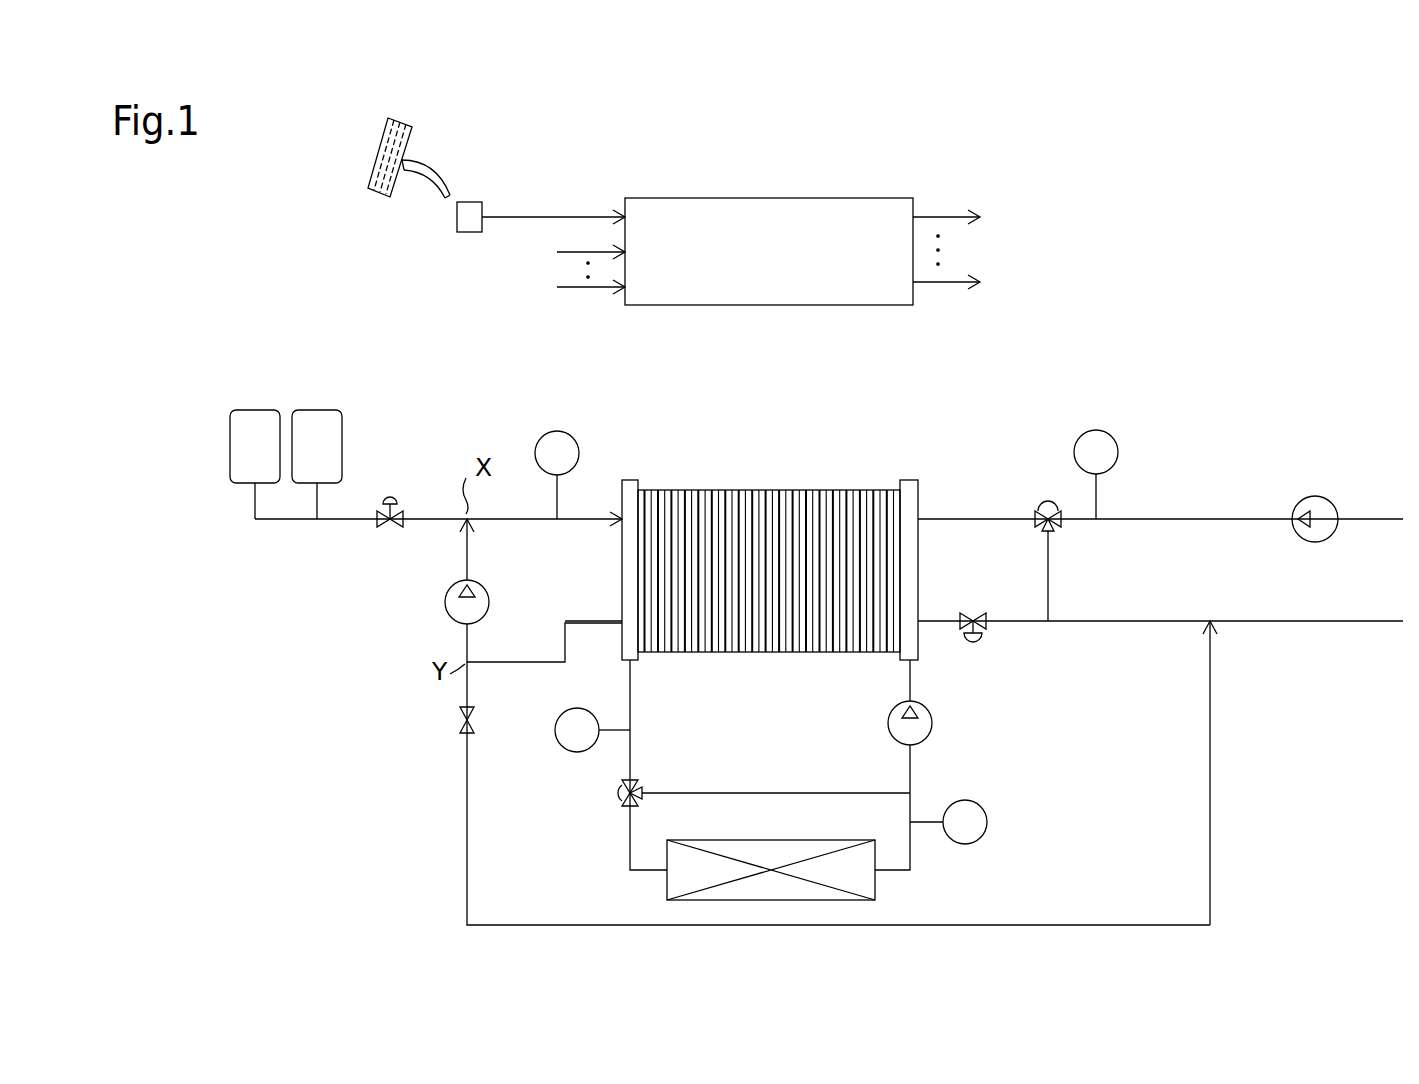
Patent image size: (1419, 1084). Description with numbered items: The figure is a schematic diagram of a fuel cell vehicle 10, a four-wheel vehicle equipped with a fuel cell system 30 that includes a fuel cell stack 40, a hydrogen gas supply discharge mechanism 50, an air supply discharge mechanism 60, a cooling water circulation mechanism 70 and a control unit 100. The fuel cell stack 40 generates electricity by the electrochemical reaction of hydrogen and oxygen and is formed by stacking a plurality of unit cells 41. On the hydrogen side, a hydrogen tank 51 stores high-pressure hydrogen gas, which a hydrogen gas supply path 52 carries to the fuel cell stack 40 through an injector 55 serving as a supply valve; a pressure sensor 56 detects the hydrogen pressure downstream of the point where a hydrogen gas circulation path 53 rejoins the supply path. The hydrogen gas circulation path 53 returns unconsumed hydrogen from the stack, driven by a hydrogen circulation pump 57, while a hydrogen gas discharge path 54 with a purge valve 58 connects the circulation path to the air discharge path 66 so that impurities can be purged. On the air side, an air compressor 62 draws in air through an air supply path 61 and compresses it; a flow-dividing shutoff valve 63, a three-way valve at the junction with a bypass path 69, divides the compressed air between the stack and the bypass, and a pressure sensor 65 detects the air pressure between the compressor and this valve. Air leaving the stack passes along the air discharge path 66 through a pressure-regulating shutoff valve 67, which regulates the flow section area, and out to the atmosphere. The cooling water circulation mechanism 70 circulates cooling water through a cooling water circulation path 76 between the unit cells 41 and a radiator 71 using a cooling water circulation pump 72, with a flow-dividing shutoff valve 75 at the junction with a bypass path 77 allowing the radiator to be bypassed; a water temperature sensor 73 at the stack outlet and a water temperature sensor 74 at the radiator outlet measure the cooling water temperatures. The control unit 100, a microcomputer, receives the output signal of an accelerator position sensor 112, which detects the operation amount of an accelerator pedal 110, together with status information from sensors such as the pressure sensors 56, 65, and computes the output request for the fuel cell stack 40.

The fuel cell vehicle 10 is at (1138, 108).
The fuel cell system 30 is at (942, 394).
The fuel cell stack 40 is at (808, 478).
The unit cells 41 is at (754, 488).
The hydrogen gas supply discharge mechanism 50 is at (304, 647).
The hydrogen tank 51 is at (230, 440).
The hydrogen gas supply path 52 is at (427, 512).
The hydrogen gas circulation path 53 is at (465, 644).
The hydrogen gas discharge path 54 is at (465, 783).
The injector 55 is at (386, 530).
The pressure sensor 56 is at (562, 436).
The hydrogen circulation pump 57 is at (489, 598).
The purge valve 58 is at (460, 710).
The air supply discharge mechanism 60 is at (1036, 472).
The air supply path 61 is at (1364, 513).
The air compressor 62 is at (1330, 540).
The flow-dividing shutoff valve 63 is at (1040, 527).
The pressure sensor 65 is at (1102, 432).
The air discharge path 66 is at (1245, 626).
The pressure-regulating shutoff valve 67 is at (968, 614).
The bypass path 69 is at (1050, 597).
The cooling water circulation mechanism 70 is at (950, 864).
The radiator 71 is at (877, 884).
The cooling water circulation pump 72 is at (888, 721).
The water temperature sensor 73 is at (566, 710).
The water temperature sensor 74 is at (970, 802).
The flow-dividing shutoff valve 75 is at (612, 796).
The cooling water circulation path 76 is at (633, 710).
The bypass path 77 is at (749, 791).
The control unit 100 is at (872, 198).
The accelerator pedal 110 is at (386, 156).
The accelerator position sensor 112 is at (458, 230).